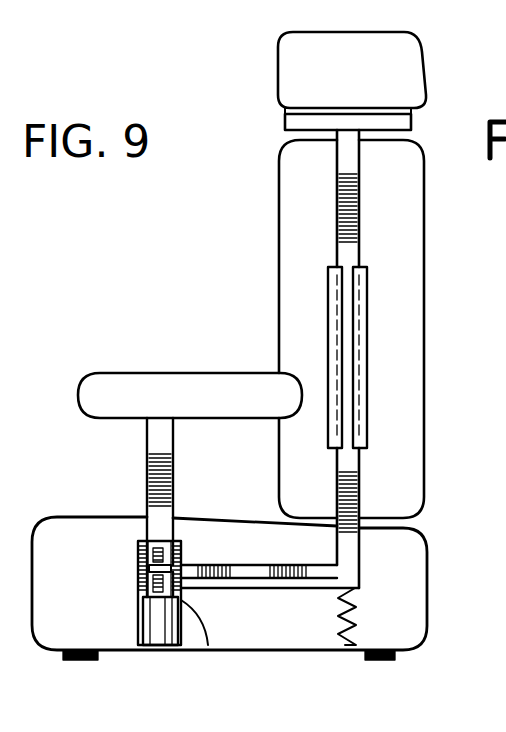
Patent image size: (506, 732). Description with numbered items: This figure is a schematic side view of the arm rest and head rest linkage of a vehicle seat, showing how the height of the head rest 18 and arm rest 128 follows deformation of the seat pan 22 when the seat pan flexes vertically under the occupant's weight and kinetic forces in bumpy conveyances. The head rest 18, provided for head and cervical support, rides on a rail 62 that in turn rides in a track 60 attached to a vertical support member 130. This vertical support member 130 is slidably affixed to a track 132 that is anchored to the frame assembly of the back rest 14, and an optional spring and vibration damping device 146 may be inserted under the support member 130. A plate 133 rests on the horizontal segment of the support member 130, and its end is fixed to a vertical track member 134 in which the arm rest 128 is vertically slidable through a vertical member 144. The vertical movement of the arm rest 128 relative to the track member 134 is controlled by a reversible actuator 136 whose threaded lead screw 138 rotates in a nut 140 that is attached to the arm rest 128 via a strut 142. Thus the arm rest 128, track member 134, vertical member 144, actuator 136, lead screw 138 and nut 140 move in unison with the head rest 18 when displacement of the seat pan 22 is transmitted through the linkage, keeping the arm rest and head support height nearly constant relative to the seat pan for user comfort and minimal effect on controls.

The head rest 18 is at (297, 48).
The rail 62 is at (292, 111).
The track 60 is at (288, 122).
The back rest 14 is at (400, 305).
The vertical support member 130 is at (362, 218).
The track 132 is at (368, 387).
The arm rest 128 is at (183, 375).
The vertical member 144 is at (157, 444).
The seat pan 22 is at (412, 581).
The strut 142 is at (140, 639).
The threaded lead screw 138 is at (158, 548).
The nut 140 is at (170, 563).
The reversible actuator 136 is at (160, 620).
The plate 133 is at (257, 572).
The vertical track member 134 is at (208, 628).
The spring and vibration damping device 146 is at (350, 632).